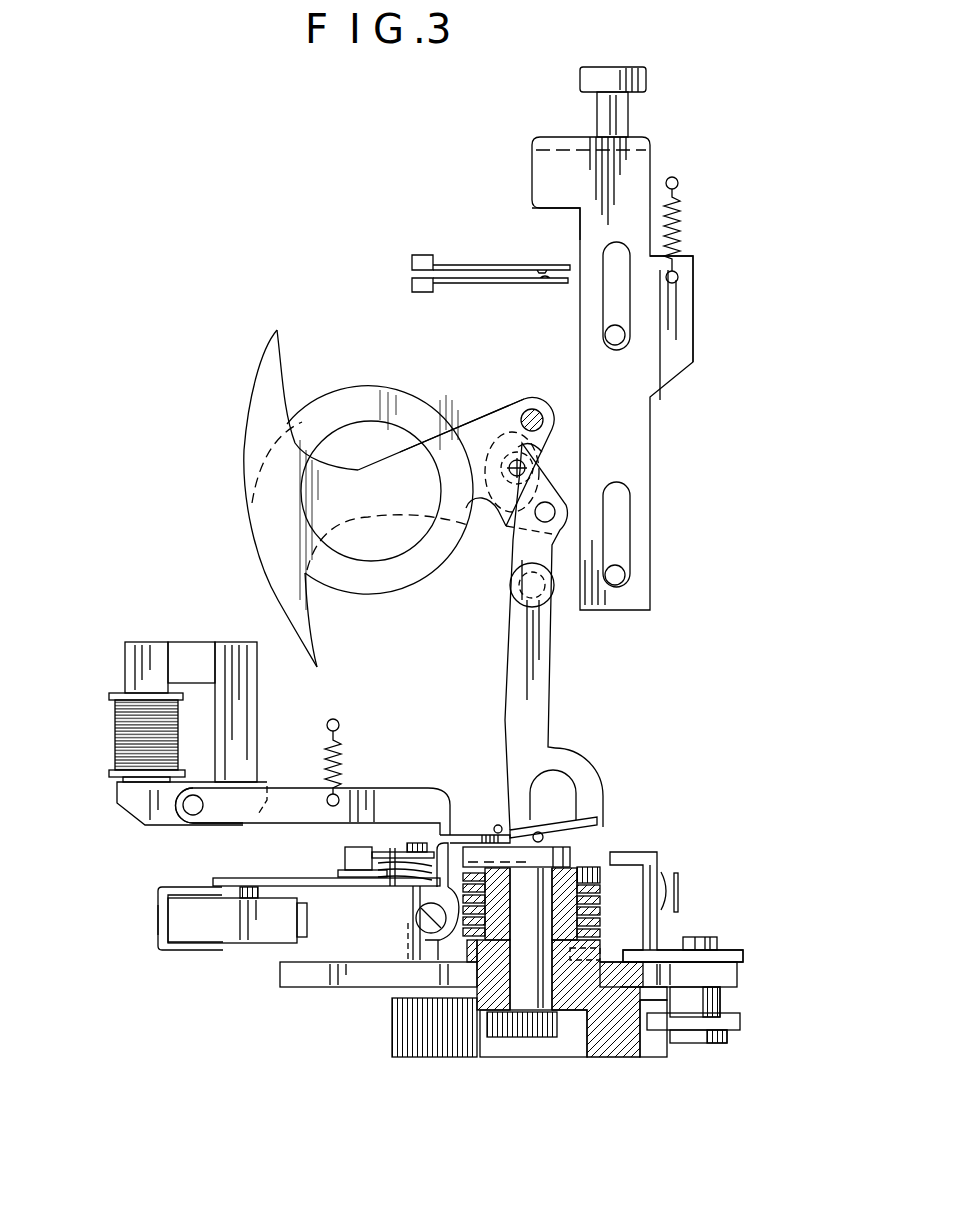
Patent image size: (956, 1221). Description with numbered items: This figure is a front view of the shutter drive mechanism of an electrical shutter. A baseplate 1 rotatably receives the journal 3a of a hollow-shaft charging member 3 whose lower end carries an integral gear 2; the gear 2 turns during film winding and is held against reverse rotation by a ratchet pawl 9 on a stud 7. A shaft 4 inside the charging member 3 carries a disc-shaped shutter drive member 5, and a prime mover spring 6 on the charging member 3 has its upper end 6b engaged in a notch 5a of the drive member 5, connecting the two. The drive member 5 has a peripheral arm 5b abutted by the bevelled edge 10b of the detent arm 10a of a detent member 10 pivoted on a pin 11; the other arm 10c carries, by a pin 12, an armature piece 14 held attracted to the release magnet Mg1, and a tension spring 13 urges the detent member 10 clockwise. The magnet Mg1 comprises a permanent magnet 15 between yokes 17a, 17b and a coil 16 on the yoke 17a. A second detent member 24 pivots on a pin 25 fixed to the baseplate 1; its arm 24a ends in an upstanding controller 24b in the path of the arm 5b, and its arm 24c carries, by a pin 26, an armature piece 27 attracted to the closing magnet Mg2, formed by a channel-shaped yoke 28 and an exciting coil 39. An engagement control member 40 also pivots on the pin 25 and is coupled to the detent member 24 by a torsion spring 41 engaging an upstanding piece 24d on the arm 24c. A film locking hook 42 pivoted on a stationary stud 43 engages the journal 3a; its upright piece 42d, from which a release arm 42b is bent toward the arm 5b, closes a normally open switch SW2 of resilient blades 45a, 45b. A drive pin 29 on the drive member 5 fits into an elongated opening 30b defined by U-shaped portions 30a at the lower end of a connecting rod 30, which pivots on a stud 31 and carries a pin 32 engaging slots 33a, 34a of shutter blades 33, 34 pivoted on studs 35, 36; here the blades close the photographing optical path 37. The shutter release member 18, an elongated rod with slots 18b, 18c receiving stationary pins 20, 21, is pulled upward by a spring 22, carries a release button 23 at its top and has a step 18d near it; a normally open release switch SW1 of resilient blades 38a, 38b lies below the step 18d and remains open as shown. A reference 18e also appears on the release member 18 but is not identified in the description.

The baseplate 1 is at (737, 972).
The gear 2 is at (398, 1012).
The charging member 3 is at (498, 930).
The journal 3a is at (598, 942).
The shaft 4 is at (490, 965).
The shutter drive member 5 is at (540, 895).
The notch 5a is at (598, 850).
The arm 5b is at (536, 858).
The prime mover spring 6 is at (600, 910).
The upper end of spring 6b is at (602, 878).
The stud 7 is at (740, 1022).
The ratchet pawl 9 is at (692, 1043).
The detent member 10 is at (395, 786).
The detent arm 10a is at (468, 835).
The edge 10b is at (496, 827).
The arm 10c is at (270, 826).
The pin 11 is at (412, 930).
The pin 12 is at (192, 815).
The coiled tension spring 13 is at (340, 762).
The armature piece 14 is at (135, 820).
The permanent magnet 15 is at (188, 642).
The solenoid coil 16 is at (115, 735).
The yoke 17a is at (125, 662).
The yoke 17b is at (257, 695).
The shutter release member 18 is at (580, 362).
The elongated slot 18b is at (615, 298).
The elongated slot 18c is at (614, 488).
The step 18d is at (578, 212).
The projection 18e is at (688, 268).
The stationary pin 20 is at (620, 333).
The stationary pin 21 is at (625, 578).
The coiled spring 22 is at (680, 222).
The shutter release button 23 is at (640, 92).
The detent member 24 is at (300, 880).
The arm 24a is at (425, 912).
The controller 24b is at (440, 845).
The arm 24c is at (246, 888).
The upstanding piece 24d is at (348, 860).
The pin 25 is at (385, 982).
The pin 26 is at (215, 889).
The armature piece 27 is at (304, 934).
The channel-shaped yoke 28 is at (190, 940).
The drive pin 29 is at (540, 831).
The connecting rod 30 is at (512, 650).
The U-shaped portions 30a is at (598, 820).
The elongated opening 30b is at (575, 800).
The stud 31 is at (510, 588).
The pin 32 is at (509, 470).
The shutter blade 33 is at (393, 598).
The elongated slot 33a is at (478, 523).
The shutter blade 34 is at (414, 402).
The elongated slot 34a is at (495, 430).
The stud 35 is at (533, 409).
The stud 36 is at (550, 503).
The photographing optical path 37 is at (368, 422).
The resilient blade 38a is at (522, 266).
The resilient blade 38b is at (522, 284).
The exciting coil 39 is at (158, 925).
The engagement control member 40 is at (415, 855).
The torsion spring 41 is at (391, 888).
The film locking hook 42 is at (722, 1000).
The release arm 42b is at (645, 856).
The upright piece 42d is at (658, 938).
The stationary stud 43 is at (718, 942).
The resilient blade 45a is at (666, 878).
The resilient blade 45b is at (679, 900).
The shutter release magnet Mg1 is at (160, 632).
The magnet Mg2 is at (237, 945).
The release switch SW1 is at (460, 262).
The switch SW2 is at (684, 887).